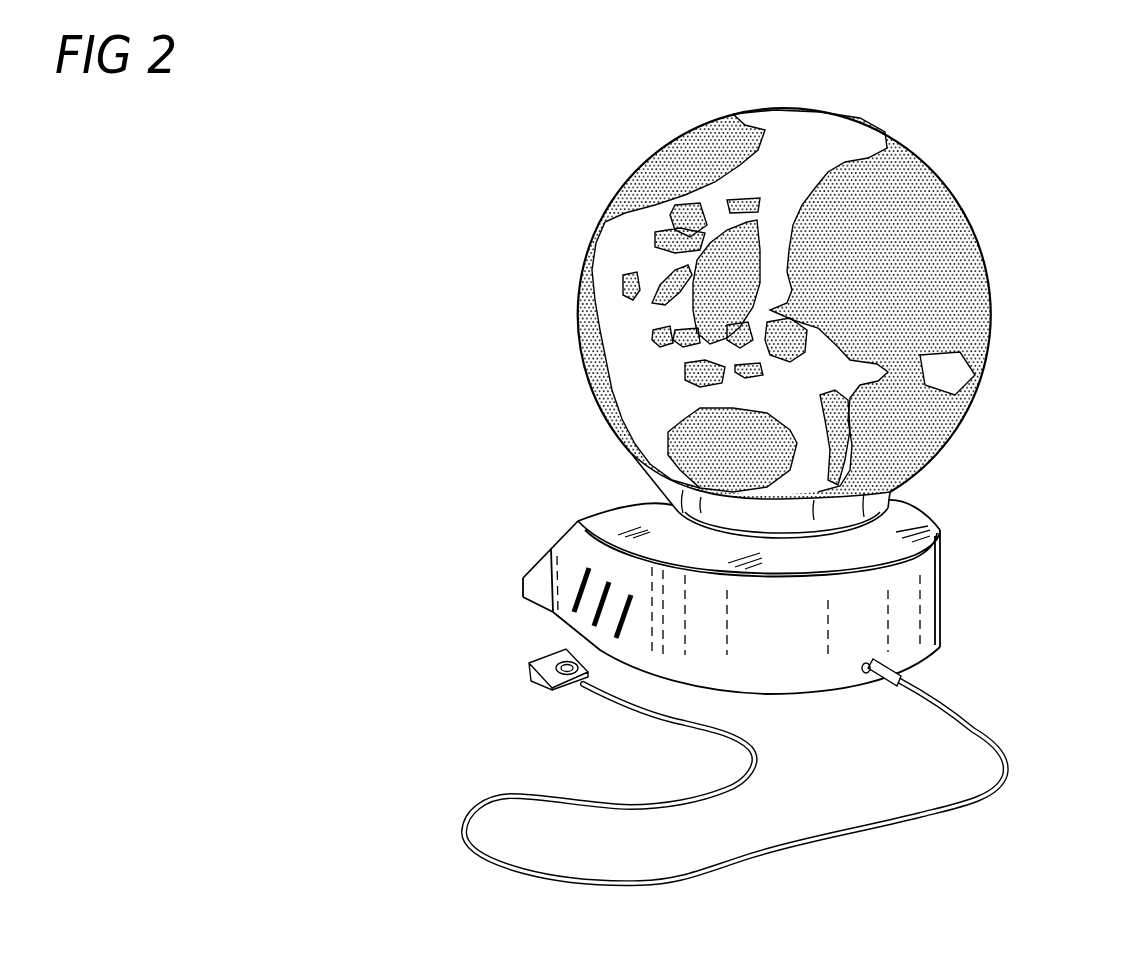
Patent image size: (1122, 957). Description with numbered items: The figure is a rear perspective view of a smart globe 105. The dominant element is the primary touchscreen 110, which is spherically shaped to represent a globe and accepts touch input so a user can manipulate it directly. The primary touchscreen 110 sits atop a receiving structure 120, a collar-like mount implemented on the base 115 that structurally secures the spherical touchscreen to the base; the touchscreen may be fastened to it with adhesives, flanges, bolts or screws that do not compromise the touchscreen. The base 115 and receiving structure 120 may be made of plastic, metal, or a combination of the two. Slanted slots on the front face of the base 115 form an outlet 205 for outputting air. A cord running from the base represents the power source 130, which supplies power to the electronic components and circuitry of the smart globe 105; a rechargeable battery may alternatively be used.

The smart globe 105 is at (786, 487).
The primary touchscreen 110 is at (988, 274).
The base 115 is at (696, 597).
The receiving structure 120 is at (643, 480).
The power source 130 is at (1003, 742).
The outlet 205 is at (577, 588).